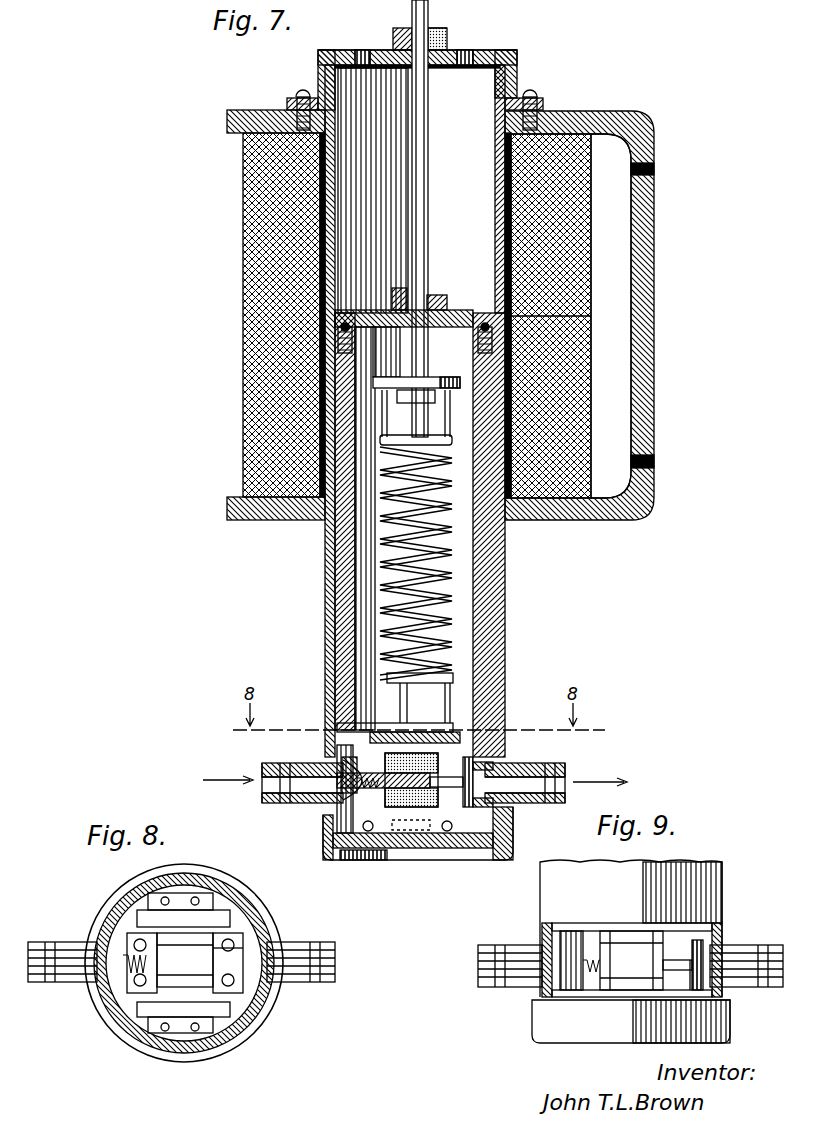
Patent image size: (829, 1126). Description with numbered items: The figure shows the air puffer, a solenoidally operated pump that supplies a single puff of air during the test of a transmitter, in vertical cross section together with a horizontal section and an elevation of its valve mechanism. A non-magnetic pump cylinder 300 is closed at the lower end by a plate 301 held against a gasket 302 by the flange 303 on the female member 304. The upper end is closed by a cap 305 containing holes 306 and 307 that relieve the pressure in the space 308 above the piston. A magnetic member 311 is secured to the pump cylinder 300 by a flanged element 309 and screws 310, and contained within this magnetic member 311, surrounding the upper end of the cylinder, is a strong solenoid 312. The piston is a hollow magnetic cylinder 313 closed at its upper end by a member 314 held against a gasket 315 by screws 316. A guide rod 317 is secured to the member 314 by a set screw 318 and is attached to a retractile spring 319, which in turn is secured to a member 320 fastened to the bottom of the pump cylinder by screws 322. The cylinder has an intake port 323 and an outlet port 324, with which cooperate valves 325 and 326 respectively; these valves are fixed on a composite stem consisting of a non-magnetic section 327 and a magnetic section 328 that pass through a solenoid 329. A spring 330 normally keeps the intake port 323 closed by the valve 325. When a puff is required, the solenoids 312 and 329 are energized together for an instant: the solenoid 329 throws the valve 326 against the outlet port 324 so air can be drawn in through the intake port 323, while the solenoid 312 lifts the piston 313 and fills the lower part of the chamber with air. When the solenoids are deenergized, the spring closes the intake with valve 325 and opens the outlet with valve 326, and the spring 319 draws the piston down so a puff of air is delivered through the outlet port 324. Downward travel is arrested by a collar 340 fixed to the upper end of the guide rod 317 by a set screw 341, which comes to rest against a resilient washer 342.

In FIG. 7, the pump cylinder 300 is at (517, 78).
In FIG. 7, the plate 301 is at (440, 850).
In FIG. 7, the gasket 302 is at (510, 830).
In FIG. 7, the flange 303 is at (500, 855).
In FIG. 8, the flange 303 is at (255, 1030).
In FIG. 9, the flange 303 is at (540, 1030).
In FIG. 7, the female member 304 is at (325, 835).
In FIG. 7, the cap 305 is at (515, 52).
In FIG. 7, the hole 306 is at (477, 53).
In FIG. 7, the hole 307 is at (370, 52).
In FIG. 7, the space 308 is at (511, 198).
In FIG. 7, the flanged element 309 is at (545, 103).
In FIG. 7, the screw 310 is at (300, 92).
In FIG. 7, the magnetic member 311 is at (640, 330).
In FIG. 7, the solenoid 312 is at (560, 270).
In FIG. 7, the hollow magnetic cylinder 313 is at (330, 570).
In FIG. 7, the member 314 is at (483, 305).
In FIG. 7, the gasket 315 is at (433, 330).
In FIG. 7, the screw 316 is at (340, 312).
In FIG. 7, the guide rod 317 is at (414, 152).
In FIG. 7, the set screw 318 is at (450, 310).
In FIG. 7, the retractile spring 319 is at (445, 568).
In FIG. 7, the member 320 is at (460, 737).
In FIG. 8, the member 320 is at (137, 918).
In FIG. 9, the member 320 is at (620, 990).
In FIG. 7, the screw 322 is at (447, 832).
In FIG. 8, the screw 322 is at (195, 900).
In FIG. 7, the intake port 323 is at (268, 785).
In FIG. 7, the outlet port 324 is at (525, 803).
In FIG. 7, the valve 325 is at (343, 767).
In FIG. 8, the valve 325 is at (130, 985).
In FIG. 9, the valve 325 is at (575, 950).
In FIG. 7, the valve 326 is at (490, 760).
In FIG. 8, the valve 326 is at (243, 950).
In FIG. 9, the valve 326 is at (697, 945).
In FIG. 7, the non-magnetic section 327 is at (468, 805).
In FIG. 8, the non-magnetic section 327 is at (225, 945).
In FIG. 9, the non-magnetic section 327 is at (680, 960).
In FIG. 7, the magnetic section 328 is at (345, 752).
In FIG. 7, the solenoid 329 is at (420, 755).
In FIG. 8, the solenoid 329 is at (230, 1010).
In FIG. 9, the solenoid 329 is at (623, 945).
In FIG. 7, the spring 330 is at (347, 795).
In FIG. 8, the spring 330 is at (125, 965).
In FIG. 7, the collar 340 is at (398, 28).
In FIG. 7, the set screw 341 is at (449, 30).
In FIG. 7, the resilient washer 342 is at (447, 48).